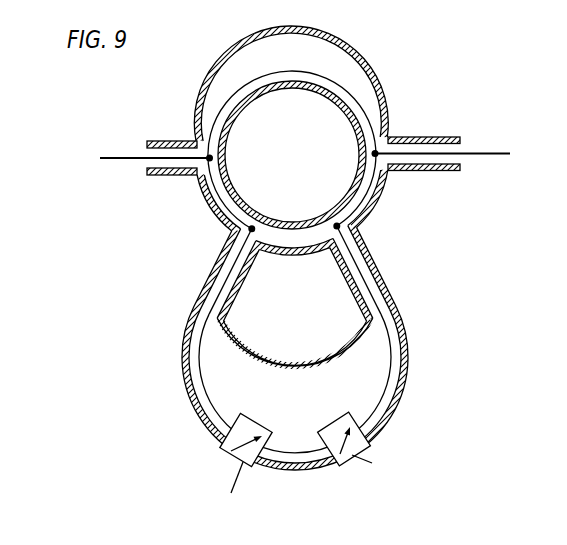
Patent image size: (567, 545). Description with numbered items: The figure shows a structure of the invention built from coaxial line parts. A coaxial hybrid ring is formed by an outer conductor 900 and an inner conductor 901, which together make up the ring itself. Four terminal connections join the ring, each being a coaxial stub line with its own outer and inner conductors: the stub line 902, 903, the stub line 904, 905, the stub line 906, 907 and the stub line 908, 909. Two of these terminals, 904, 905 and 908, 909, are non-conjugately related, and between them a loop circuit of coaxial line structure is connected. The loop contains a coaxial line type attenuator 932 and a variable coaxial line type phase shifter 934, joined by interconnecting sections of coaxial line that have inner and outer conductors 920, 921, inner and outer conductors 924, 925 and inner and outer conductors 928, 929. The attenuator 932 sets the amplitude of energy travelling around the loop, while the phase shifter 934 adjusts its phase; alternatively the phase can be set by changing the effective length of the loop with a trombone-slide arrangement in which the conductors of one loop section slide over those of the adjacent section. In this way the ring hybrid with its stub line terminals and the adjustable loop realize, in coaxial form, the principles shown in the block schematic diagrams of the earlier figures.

The outer conductor 900 is at (293, 129).
The inner conductor 901 is at (270, 71).
The coaxial stub line outer conductor 902 is at (423, 137).
The coaxial stub line inner conductor 903 is at (498, 151).
The coaxial stub line outer conductor 904 is at (367, 253).
The coaxial stub line inner conductor 905 is at (373, 283).
The coaxial stub line outer conductor 906 is at (165, 176).
The coaxial stub line inner conductor 907 is at (123, 164).
The coaxial stub line outer conductor 908 is at (248, 268).
The coaxial stub line inner conductor 909 is at (221, 297).
The coaxial line section inner conductor 920 is at (188, 402).
The coaxial line section outer conductor 921 is at (213, 413).
The coaxial line section inner conductor 924 is at (292, 437).
The coaxial line section outer conductor 925 is at (296, 455).
The coaxial line section inner conductor 928 is at (408, 358).
The coaxial line section outer conductor 929 is at (391, 373).
The coaxial line type attenuator 932 is at (237, 462).
The variable coaxial line type phase shifter 934 is at (338, 413).